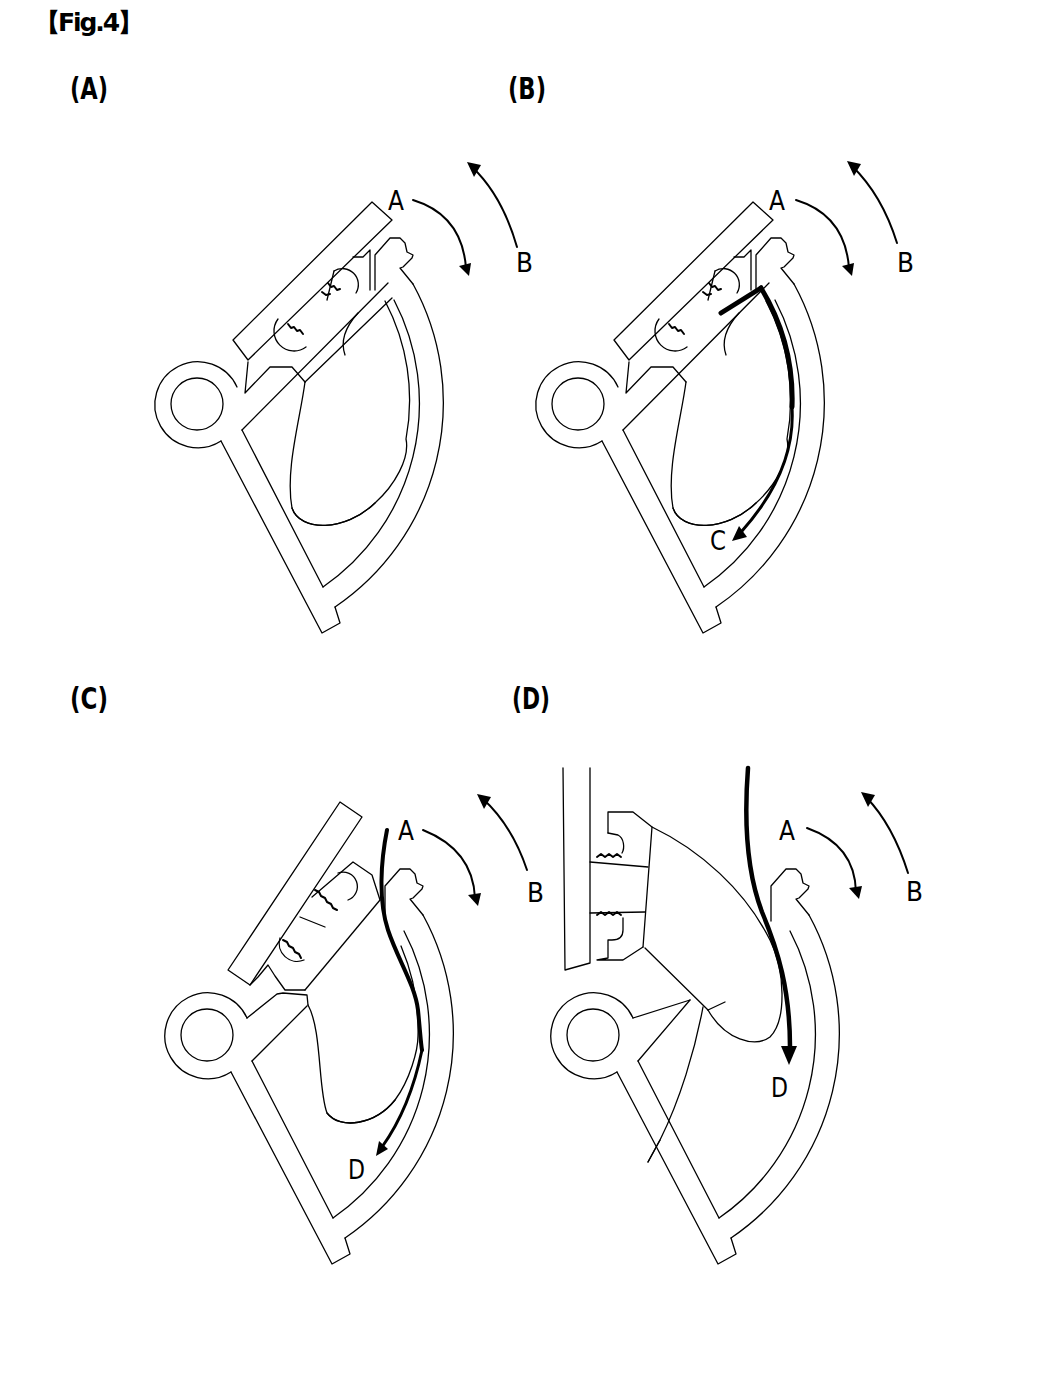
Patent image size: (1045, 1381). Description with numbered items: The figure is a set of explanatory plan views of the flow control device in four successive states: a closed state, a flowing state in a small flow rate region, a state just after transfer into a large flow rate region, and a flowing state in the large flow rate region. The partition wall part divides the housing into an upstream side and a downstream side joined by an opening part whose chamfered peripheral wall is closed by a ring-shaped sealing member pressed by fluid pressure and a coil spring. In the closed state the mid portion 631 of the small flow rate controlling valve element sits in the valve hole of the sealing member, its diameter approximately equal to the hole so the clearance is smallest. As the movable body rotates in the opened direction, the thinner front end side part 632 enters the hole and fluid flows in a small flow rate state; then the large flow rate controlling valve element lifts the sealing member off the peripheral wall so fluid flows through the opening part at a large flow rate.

The mid portion 631 is at (327, 293).
The front end side part 632 is at (702, 290).